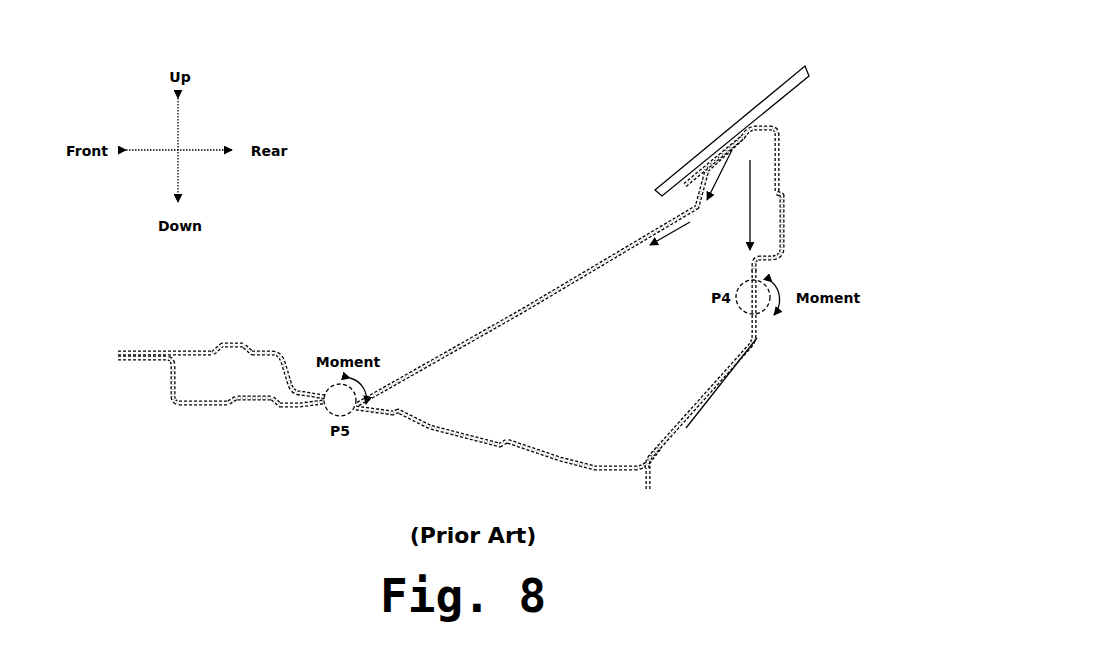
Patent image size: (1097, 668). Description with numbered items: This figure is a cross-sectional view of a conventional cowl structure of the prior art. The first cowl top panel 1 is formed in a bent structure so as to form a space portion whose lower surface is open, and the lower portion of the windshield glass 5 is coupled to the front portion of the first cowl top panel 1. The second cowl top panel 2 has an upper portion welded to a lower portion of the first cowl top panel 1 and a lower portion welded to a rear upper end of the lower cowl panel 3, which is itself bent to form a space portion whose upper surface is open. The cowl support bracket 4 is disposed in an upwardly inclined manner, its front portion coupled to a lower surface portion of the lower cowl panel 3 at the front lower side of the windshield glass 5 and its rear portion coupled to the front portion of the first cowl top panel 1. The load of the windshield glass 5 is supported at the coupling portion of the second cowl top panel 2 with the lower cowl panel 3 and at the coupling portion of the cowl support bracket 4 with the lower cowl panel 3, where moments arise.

The first cowl top panel 1 is at (780, 145).
The second cowl top panel 2 is at (783, 222).
The lower cowl panel 3 is at (723, 378).
The cowl support bracket 4 is at (522, 309).
The windshield glass 5 is at (717, 142).